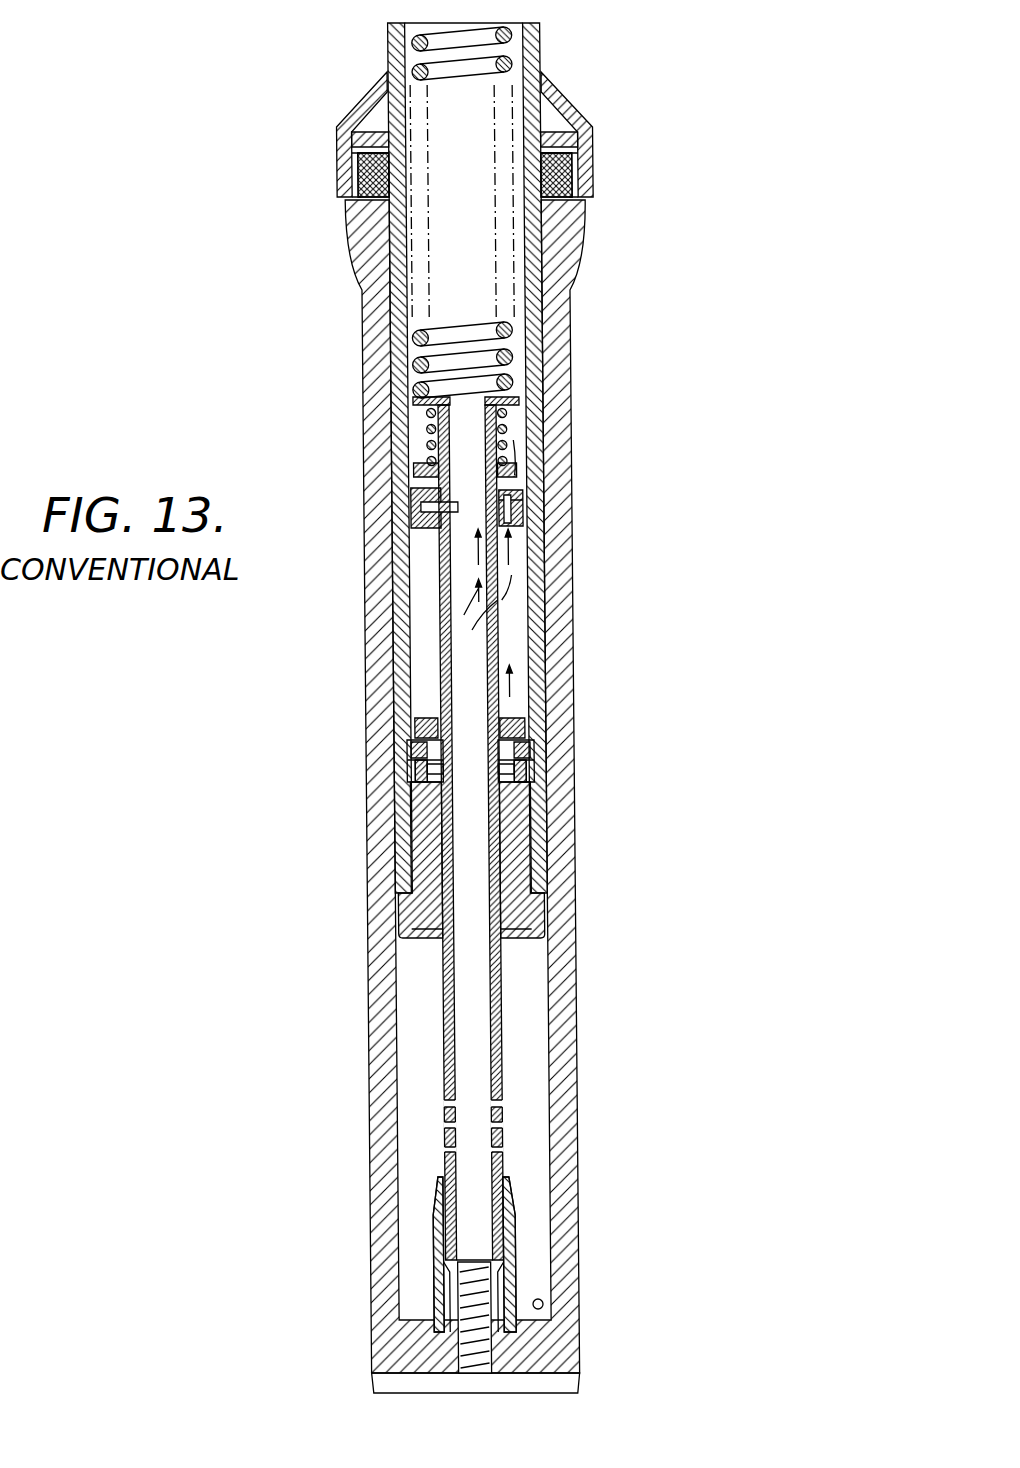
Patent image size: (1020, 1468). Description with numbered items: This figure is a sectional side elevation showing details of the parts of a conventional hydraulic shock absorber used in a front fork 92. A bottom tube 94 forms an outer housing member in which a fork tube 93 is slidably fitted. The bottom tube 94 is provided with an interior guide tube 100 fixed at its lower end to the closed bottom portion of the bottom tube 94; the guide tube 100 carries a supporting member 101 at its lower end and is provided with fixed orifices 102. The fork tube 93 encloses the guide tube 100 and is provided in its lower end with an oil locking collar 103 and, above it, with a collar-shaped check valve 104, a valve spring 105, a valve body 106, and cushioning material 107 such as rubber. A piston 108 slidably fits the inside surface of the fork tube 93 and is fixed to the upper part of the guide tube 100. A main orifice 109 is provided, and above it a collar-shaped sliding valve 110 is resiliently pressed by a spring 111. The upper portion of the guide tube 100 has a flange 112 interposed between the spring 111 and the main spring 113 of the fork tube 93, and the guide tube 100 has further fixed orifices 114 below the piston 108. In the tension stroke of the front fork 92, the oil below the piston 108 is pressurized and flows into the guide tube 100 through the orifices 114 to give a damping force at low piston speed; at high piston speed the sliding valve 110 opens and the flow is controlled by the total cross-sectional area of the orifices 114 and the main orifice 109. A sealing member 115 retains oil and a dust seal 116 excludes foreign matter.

The front fork 92 is at (349, 104).
The fork tube 93 is at (545, 650).
The bottom tube 94 is at (560, 996).
The guide tube 100 is at (443, 998).
The supporting member 101 is at (433, 1233).
The fixed orifices 102 is at (497, 1152).
The oil locking collar 103 is at (520, 852).
The collar-shaped check valve 104 is at (522, 768).
The valve spring 105 is at (528, 744).
The valve body 106 is at (413, 757).
The cushioning material 107 is at (423, 728).
The piston 108 is at (423, 527).
The main orifice 109 is at (520, 506).
The collar-shaped sliding valve 110 is at (517, 470).
The spring 111 is at (506, 430).
The flange 112 is at (516, 398).
The main spring 113 is at (520, 358).
The fixed orifices 114 is at (503, 613).
The sealing member 115 is at (593, 155).
The dust seal 116 is at (568, 96).